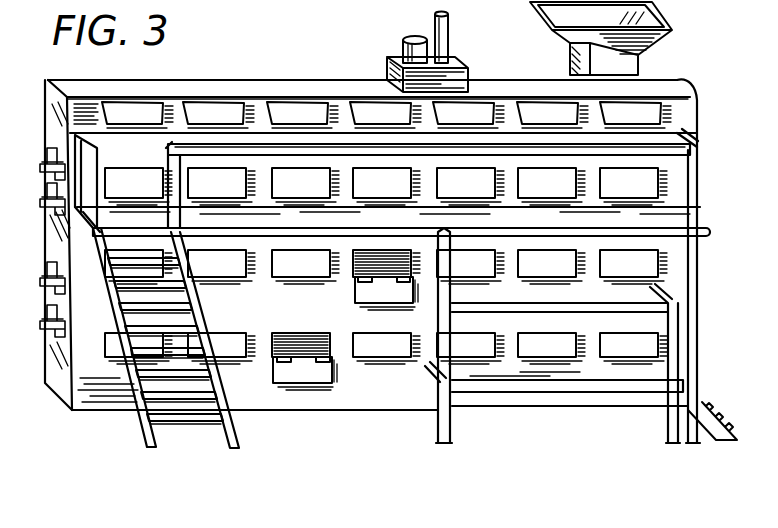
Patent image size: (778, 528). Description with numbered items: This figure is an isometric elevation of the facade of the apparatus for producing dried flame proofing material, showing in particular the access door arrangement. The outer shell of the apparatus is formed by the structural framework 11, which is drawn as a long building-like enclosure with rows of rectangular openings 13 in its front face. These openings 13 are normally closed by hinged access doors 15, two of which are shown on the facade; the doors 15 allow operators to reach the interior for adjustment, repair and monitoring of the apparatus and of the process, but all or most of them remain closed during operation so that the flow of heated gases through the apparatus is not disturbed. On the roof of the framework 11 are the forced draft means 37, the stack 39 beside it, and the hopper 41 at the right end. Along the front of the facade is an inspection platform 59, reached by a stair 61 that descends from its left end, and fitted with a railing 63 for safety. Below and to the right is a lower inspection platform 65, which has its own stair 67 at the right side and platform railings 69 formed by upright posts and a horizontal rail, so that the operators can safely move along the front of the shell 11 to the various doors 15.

The structural framework 11 is at (211, 88).
The openings 13 is at (304, 333).
The access doors 15 is at (368, 292).
The forced draft means 37 is at (390, 66).
The stack 39 is at (449, 29).
The hopper 41 is at (647, 38).
The inspection platform 59 is at (700, 222).
The stair 61 is at (143, 420).
The railing 63 is at (168, 150).
The lower inspection platform 65 is at (494, 377).
The stair 67 is at (708, 418).
The platform railings 69 is at (478, 308).